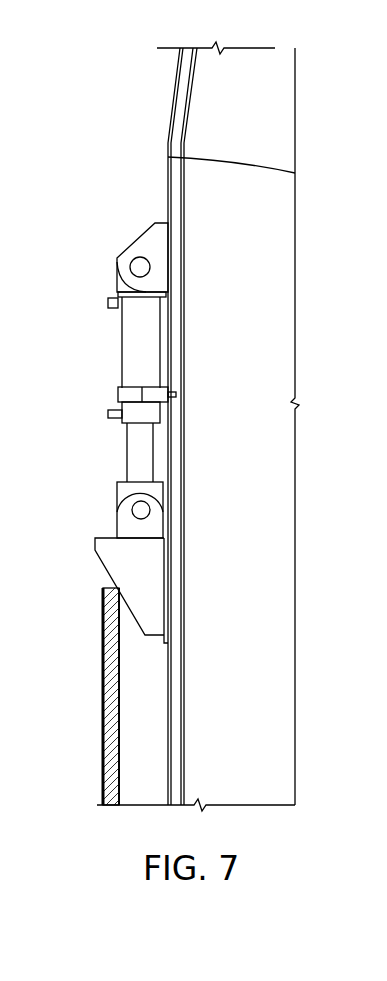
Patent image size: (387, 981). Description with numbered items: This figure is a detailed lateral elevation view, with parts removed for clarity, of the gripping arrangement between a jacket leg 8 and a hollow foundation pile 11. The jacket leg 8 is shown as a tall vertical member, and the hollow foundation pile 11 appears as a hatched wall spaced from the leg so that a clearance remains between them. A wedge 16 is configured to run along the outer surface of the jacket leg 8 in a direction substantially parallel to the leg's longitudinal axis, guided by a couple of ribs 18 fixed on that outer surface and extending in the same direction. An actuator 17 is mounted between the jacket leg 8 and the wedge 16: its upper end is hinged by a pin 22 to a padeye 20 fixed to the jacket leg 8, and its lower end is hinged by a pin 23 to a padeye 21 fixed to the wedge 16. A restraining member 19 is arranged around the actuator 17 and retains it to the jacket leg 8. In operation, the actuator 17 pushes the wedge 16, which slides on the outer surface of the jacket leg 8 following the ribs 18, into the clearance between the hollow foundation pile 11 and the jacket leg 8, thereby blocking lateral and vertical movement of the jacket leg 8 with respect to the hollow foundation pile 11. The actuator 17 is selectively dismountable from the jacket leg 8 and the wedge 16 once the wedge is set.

The jacket leg 8 is at (270, 538).
The hollow foundation pile 11 is at (108, 708).
The wedge 16 is at (113, 555).
The actuator 17 is at (128, 343).
The ribs 18 is at (168, 575).
The restraining member 19 is at (150, 390).
The padeye 20 is at (150, 243).
The padeye 21 is at (125, 528).
The pin 22 is at (137, 268).
The pin 23 is at (141, 510).